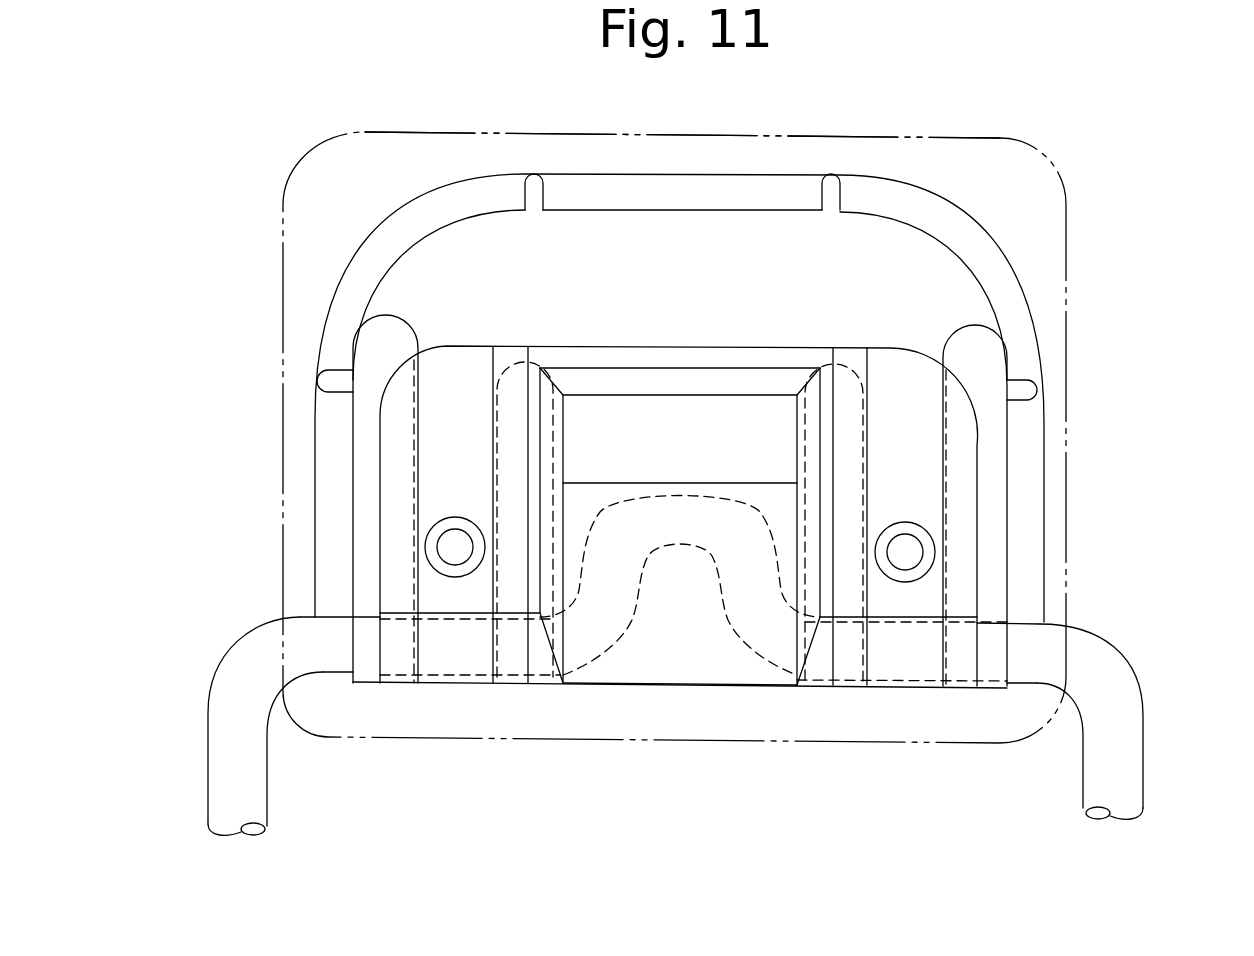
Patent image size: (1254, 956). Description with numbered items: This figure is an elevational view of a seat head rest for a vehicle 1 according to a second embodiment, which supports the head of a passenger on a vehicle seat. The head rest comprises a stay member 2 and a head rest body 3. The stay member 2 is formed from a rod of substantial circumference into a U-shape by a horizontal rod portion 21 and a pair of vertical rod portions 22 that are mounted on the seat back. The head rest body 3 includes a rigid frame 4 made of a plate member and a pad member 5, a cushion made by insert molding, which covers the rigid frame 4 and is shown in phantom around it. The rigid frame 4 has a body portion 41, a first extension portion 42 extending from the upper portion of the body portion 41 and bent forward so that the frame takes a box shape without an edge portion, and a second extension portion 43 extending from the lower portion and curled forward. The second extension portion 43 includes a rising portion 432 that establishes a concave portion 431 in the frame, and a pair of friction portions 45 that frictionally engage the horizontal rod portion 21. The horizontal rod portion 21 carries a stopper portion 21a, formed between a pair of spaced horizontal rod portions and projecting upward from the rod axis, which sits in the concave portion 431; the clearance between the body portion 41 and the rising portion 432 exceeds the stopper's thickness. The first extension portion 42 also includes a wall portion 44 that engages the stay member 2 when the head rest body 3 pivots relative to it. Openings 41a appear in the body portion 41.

The seat head rest for a vehicle 1 is at (287, 168).
The stay member 2 is at (1133, 678).
The horizontal rod portion 21 is at (1017, 638).
The stopper portion 21a is at (688, 500).
The vertical rod portions 22 is at (1132, 790).
The head rest body 3 is at (1063, 170).
The rigid frame 4 is at (908, 186).
The body portion 41 is at (945, 297).
The mounting hole 41a is at (433, 553).
The first extension portion 42 is at (1025, 452).
The second extension portion 43 is at (468, 357).
The concave portion 431 is at (652, 655).
The rising portion 432 is at (625, 420).
The wall portion 44 is at (702, 698).
The friction portions 45 is at (457, 697).
The pad member 5 is at (533, 126).